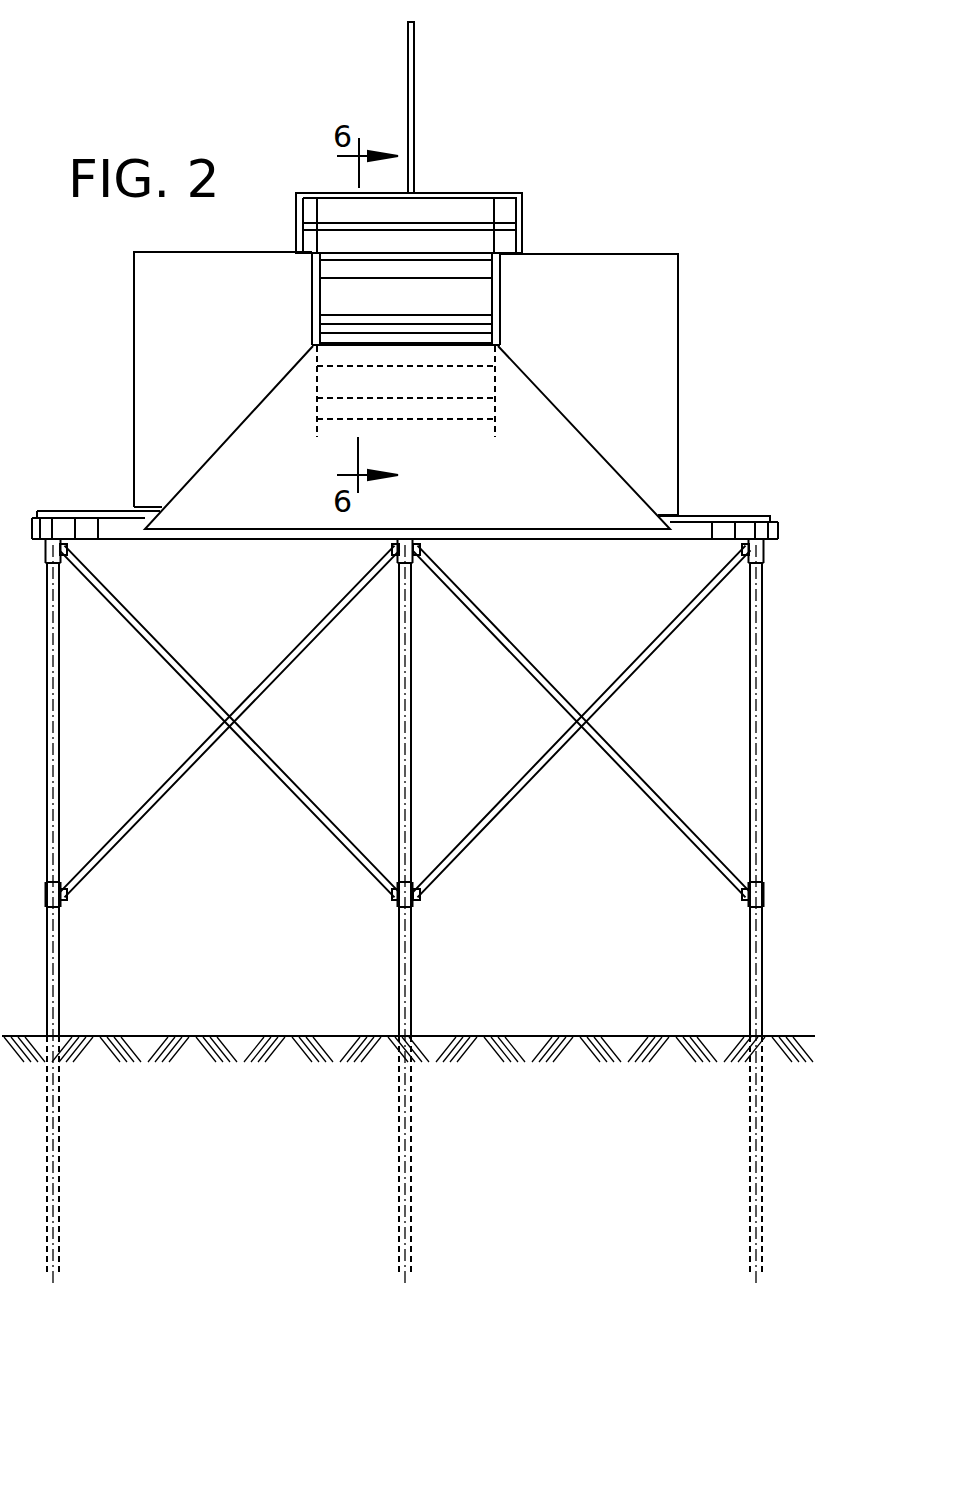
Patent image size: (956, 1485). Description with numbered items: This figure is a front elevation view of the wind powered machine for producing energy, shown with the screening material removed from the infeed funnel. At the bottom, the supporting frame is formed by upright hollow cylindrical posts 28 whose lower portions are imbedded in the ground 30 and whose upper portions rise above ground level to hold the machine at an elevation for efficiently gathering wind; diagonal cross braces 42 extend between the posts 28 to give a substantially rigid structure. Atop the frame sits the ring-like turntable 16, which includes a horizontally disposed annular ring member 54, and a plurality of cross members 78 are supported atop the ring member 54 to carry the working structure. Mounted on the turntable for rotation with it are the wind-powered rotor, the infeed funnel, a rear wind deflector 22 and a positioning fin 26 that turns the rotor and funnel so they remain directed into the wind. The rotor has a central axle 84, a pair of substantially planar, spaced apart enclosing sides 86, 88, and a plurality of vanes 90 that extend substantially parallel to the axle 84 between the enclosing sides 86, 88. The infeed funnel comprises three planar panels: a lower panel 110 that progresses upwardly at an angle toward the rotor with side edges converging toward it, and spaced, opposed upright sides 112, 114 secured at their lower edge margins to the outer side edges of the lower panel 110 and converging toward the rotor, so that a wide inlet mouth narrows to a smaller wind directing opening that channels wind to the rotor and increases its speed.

The turntable 16 is at (700, 543).
The rear wind deflector 22 is at (482, 213).
The positioning fin 26 is at (414, 120).
The upright hollow cylindrical posts 28 is at (60, 978).
The ground 30 is at (783, 1037).
The diagonal cross braces 42 is at (653, 645).
The ring member 54 is at (780, 532).
The cross members 78 is at (118, 510).
The central axle 84 is at (473, 327).
The enclosing side 86 is at (316, 421).
The enclosing side 88 is at (496, 421).
The vanes 90 is at (473, 292).
The lower panel 110 is at (260, 511).
The upright side 112 is at (248, 338).
The upright side 114 is at (662, 314).